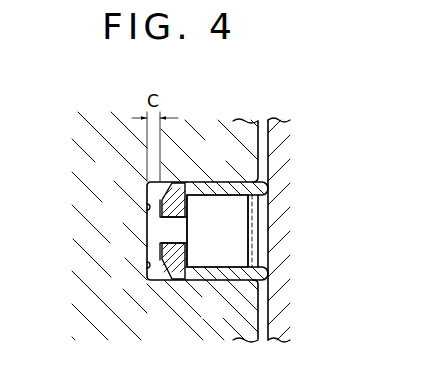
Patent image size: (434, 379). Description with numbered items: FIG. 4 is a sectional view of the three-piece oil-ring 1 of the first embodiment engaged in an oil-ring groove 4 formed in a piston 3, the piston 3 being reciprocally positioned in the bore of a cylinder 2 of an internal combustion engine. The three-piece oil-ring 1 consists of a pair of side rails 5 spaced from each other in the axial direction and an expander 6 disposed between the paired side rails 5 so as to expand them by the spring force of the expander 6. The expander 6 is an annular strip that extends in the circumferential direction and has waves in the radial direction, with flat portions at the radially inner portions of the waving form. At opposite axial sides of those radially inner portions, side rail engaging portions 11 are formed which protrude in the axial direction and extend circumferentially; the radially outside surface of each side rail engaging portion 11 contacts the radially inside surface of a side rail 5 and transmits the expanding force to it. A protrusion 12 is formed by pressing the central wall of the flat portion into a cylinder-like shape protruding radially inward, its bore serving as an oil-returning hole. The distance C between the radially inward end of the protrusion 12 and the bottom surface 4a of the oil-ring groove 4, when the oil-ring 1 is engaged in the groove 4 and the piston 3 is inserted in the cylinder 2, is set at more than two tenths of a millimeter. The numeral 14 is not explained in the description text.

The three-piece oil-ring 1 is at (255, 229).
The cylinder 2 is at (267, 313).
The piston 3 is at (259, 143).
The oil-ring groove 4 is at (118, 241).
The bottom surface of oil-ring groove 4a is at (150, 207).
The side rail 5 is at (213, 187).
The expander 6 is at (233, 235).
The side rail engaging portion 11 is at (149, 183).
The protrusion 12 is at (160, 256).
The annular groove 14 is at (177, 242).